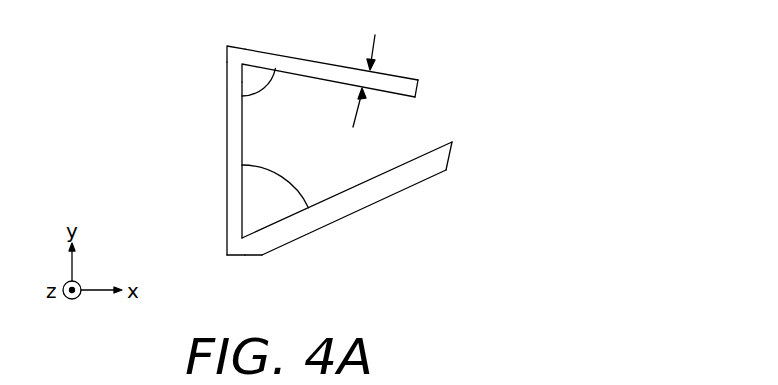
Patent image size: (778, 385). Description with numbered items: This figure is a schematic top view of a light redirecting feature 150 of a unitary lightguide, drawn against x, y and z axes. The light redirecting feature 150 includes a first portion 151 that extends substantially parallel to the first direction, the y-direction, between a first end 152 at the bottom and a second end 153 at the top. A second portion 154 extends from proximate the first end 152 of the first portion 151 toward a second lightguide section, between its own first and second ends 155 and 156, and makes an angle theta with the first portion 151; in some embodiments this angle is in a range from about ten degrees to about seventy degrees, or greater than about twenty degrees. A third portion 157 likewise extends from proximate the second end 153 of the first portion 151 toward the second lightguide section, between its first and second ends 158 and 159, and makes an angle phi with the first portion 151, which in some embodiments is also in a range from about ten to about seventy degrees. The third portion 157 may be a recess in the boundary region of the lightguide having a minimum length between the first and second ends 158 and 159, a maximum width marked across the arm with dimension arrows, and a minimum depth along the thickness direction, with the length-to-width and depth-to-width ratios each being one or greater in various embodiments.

The light redirecting feature 150 is at (150, 59).
The first portion 151 is at (230, 137).
The first end of the first portion 152 is at (236, 257).
The second end of the first portion 153 is at (237, 46).
The second portion 154 is at (367, 196).
The first end of the second portion 155 is at (250, 257).
The second end of the second portion 156 is at (450, 158).
The third portion 157 is at (325, 63).
The first end of the third portion 158 is at (247, 50).
The second end of the third portion 159 is at (418, 91).